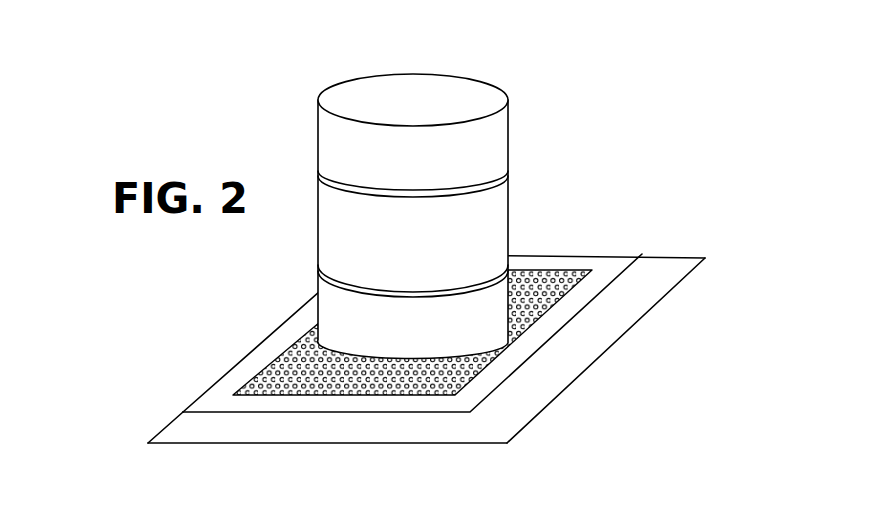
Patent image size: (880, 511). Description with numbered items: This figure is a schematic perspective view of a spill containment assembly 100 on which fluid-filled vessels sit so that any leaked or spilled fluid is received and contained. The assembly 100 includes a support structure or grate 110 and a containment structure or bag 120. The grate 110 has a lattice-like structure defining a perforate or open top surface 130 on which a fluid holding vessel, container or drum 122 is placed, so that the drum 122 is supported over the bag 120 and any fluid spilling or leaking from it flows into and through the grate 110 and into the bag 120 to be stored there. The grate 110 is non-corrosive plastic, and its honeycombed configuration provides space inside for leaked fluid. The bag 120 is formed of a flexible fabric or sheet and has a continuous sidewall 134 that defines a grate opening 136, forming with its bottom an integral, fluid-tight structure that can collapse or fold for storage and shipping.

The spill containment assembly 100 is at (402, 289).
The grate 110 is at (399, 290).
The bag 120 is at (455, 379).
The drum 122 is at (508, 142).
The open top surface 130 is at (583, 277).
The sidewall 134 is at (282, 428).
The grate opening 136 is at (285, 352).